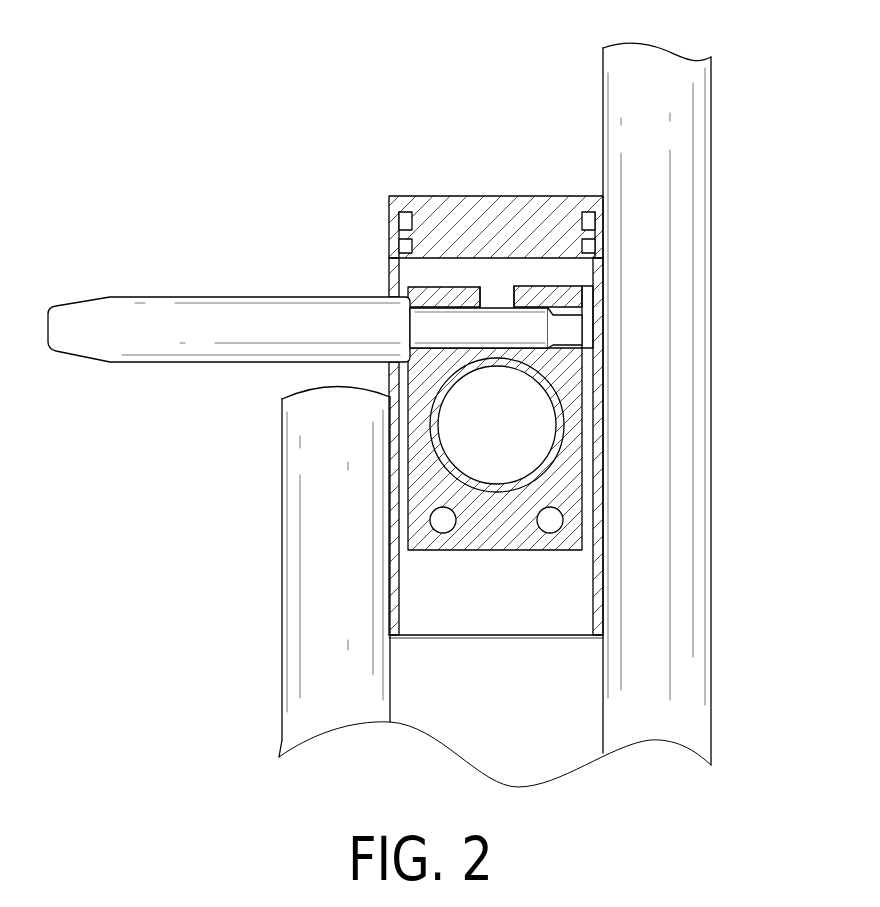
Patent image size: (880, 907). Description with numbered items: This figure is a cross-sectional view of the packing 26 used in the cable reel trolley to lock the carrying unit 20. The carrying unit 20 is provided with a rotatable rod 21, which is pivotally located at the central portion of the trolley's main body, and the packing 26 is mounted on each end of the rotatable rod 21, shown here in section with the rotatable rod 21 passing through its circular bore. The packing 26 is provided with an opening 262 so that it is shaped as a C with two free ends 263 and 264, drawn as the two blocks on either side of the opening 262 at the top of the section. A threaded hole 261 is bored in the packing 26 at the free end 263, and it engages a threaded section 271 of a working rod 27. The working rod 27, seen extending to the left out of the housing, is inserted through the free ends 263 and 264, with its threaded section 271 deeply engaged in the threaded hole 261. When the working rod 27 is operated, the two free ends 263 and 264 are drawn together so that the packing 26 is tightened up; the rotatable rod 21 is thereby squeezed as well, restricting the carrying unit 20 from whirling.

The carrying unit 20 is at (166, 158).
The rotatable rod 21 is at (557, 413).
The packing 26 is at (565, 485).
The threaded hole 261 is at (563, 305).
The opening 262 is at (496, 297).
The free end 263 is at (578, 293).
The free end 264 is at (432, 293).
The working rod 27 is at (223, 322).
The threaded section 271 is at (538, 330).